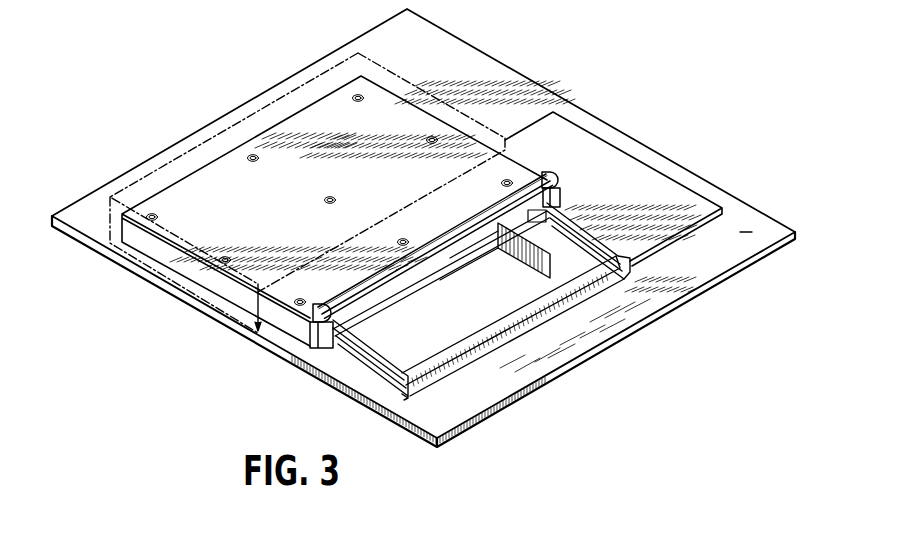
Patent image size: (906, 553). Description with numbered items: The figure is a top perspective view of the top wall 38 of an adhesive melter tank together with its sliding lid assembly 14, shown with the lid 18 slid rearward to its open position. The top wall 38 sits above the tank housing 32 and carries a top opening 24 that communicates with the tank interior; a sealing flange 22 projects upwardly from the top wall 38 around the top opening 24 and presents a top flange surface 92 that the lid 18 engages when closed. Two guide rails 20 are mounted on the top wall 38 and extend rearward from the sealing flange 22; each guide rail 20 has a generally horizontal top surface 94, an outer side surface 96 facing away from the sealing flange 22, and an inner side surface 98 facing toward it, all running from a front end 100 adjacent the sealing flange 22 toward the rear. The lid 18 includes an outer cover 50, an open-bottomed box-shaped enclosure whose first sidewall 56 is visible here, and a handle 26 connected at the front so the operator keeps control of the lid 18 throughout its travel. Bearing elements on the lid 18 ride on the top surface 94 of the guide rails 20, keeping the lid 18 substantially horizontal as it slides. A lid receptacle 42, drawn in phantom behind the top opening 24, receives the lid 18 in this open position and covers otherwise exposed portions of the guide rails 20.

The sliding lid assembly 14 is at (314, 343).
The lid 18 is at (518, 172).
The guide rails 20 is at (578, 223).
The sealing flange 22 is at (535, 318).
The top opening 24 is at (424, 354).
The handle 26 is at (376, 301).
The tank housing 32 is at (736, 269).
The top wall 38 is at (745, 231).
The lid receptacle 42 is at (311, 59).
The outer cover 50 is at (306, 193).
The first sidewall 56 is at (186, 268).
The top flange surface 92 is at (600, 256).
The top surface 94 is at (589, 248).
The outer side surface 96 is at (384, 380).
The inner side surface 98 is at (533, 230).
The front end 100 is at (398, 386).